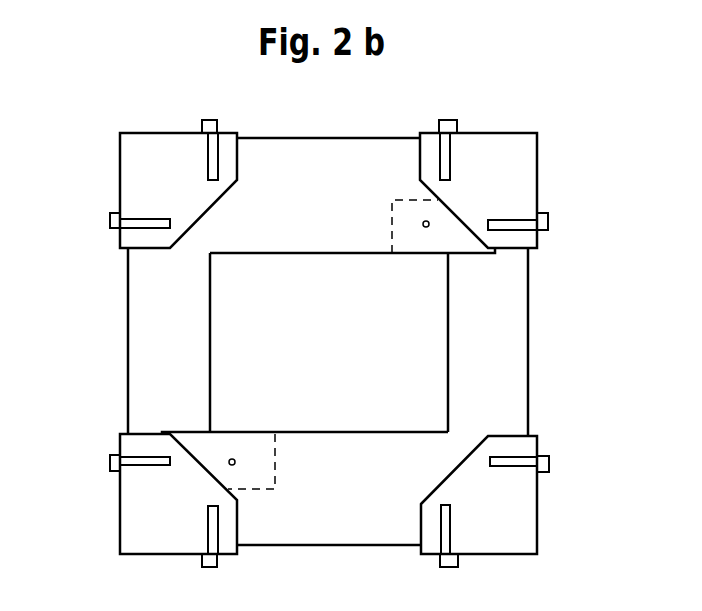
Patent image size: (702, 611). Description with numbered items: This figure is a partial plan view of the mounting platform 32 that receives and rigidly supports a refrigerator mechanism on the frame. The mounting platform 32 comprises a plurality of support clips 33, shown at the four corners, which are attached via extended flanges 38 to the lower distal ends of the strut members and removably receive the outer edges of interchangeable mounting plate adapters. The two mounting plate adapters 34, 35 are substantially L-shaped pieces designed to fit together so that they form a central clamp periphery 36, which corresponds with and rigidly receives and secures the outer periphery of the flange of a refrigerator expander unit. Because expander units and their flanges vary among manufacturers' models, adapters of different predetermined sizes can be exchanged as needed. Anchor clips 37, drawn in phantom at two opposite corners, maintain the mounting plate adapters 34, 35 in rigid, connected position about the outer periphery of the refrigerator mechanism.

The mounting platform 32 is at (546, 276).
The support clips 33 is at (158, 143).
The mounting plate adapter 34 is at (323, 208).
The mounting plate adapter 35 is at (513, 393).
The clamp periphery 36 is at (210, 315).
The anchor clips 37 is at (418, 240).
The extended flanges 38 is at (209, 162).